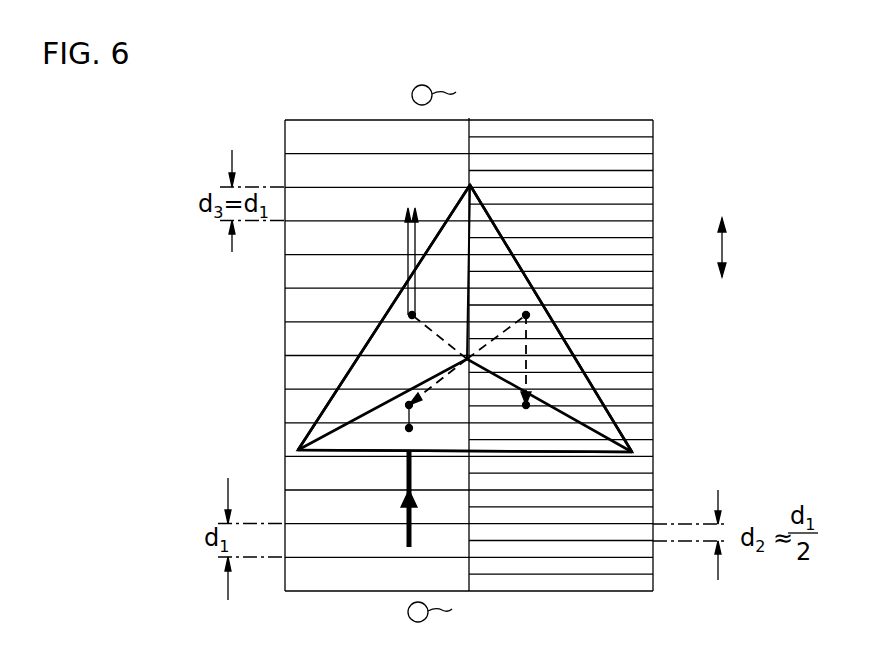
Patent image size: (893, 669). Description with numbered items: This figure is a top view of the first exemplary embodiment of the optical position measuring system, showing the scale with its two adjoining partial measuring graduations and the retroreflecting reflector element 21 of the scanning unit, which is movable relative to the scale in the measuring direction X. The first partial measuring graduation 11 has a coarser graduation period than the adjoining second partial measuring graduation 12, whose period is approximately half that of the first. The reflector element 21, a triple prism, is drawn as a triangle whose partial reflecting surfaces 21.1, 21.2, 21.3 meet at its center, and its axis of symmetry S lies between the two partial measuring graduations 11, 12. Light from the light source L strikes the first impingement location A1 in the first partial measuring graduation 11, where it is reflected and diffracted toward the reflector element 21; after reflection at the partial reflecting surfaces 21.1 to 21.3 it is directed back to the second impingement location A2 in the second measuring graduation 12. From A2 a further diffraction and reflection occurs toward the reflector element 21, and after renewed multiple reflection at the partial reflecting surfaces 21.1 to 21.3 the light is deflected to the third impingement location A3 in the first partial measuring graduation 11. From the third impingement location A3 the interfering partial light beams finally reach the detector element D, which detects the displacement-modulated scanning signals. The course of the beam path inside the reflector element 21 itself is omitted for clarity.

The first partial measuring graduation 11 is at (369, 88).
The second partial measuring graduation 12 is at (613, 88).
The reflector element 21 is at (459, 392).
The partial reflecting surface 21.1 is at (360, 378).
The partial reflecting surface 21.2 is at (583, 403).
The partial reflecting surface 21.3 is at (387, 435).
The axis of symmetry S is at (467, 359).
The first impingement location A1 is at (409, 428).
The second impingement location A2 is at (526, 315).
The third impingement location A3 is at (412, 315).
The measuring direction X is at (734, 247).
The detector element D is at (443, 96).
The light source L is at (436, 615).